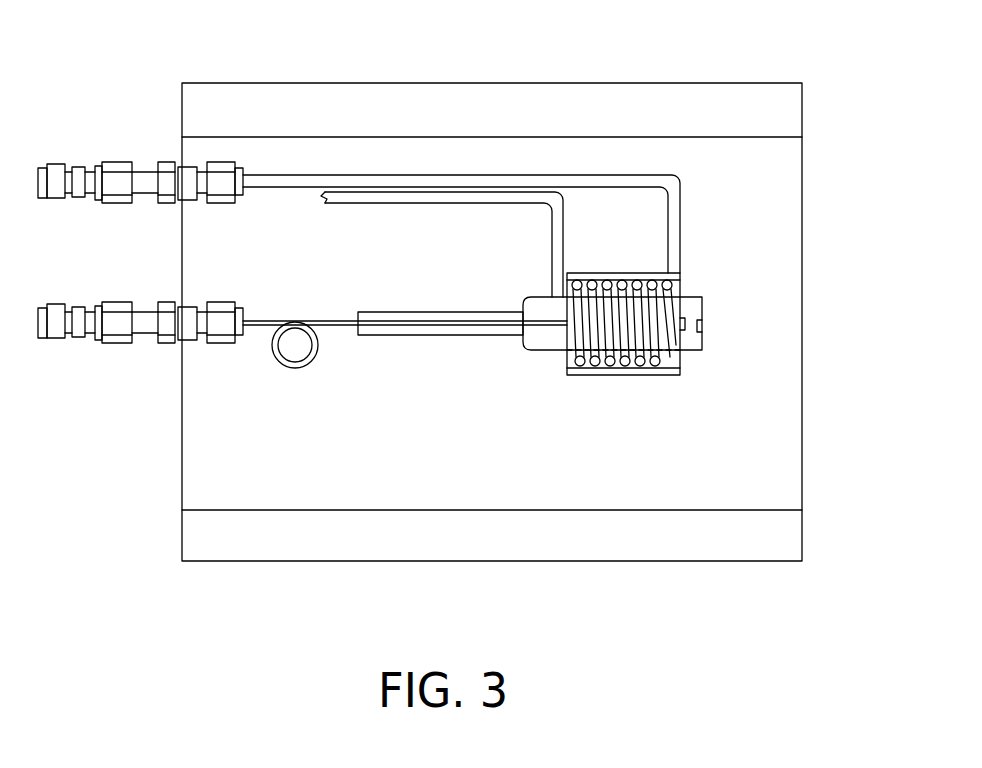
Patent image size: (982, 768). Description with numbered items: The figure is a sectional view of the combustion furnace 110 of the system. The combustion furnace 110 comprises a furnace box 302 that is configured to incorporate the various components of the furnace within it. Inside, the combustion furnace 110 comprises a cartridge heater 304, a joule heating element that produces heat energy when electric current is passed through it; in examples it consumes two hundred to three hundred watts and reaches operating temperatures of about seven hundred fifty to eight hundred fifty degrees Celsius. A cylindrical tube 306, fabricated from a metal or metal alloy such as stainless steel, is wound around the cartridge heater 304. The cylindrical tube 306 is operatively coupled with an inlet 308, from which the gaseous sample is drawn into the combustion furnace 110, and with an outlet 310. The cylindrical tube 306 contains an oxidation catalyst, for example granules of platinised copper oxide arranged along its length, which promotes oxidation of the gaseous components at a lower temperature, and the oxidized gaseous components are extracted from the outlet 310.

The combustion furnace 110 is at (459, 325).
The furnace box 302 is at (481, 498).
The cartridge heater 304 is at (716, 326).
The cylindrical tube 306 is at (627, 364).
The inlet 308 is at (116, 162).
The outlet 310 is at (112, 343).